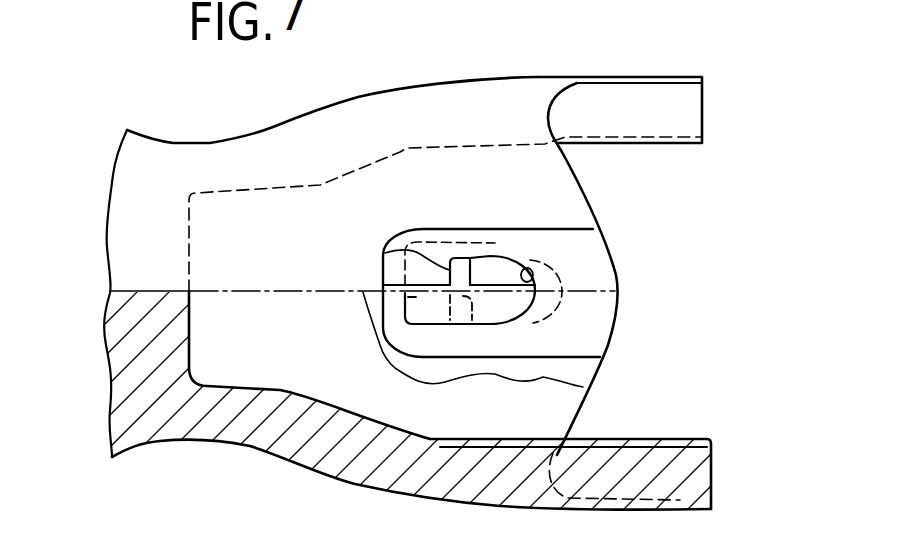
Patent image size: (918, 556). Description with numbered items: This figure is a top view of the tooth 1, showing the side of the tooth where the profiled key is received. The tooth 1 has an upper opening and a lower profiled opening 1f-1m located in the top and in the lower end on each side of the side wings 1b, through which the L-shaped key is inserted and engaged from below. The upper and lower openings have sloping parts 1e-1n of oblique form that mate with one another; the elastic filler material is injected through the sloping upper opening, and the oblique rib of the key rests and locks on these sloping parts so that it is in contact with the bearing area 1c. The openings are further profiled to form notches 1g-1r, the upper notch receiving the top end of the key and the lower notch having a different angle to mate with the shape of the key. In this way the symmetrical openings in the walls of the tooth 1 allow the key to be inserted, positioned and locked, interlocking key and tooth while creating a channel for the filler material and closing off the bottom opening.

The tooth 1 is at (358, 97).
The side wings 1b is at (660, 93).
The bearing area 1c is at (530, 262).
The sloping parts of the upper and lower openings 1e-1n is at (469, 291).
The upper opening and lower profiled opening 1f-1m is at (513, 298).
The notches 1g-1r is at (469, 291).